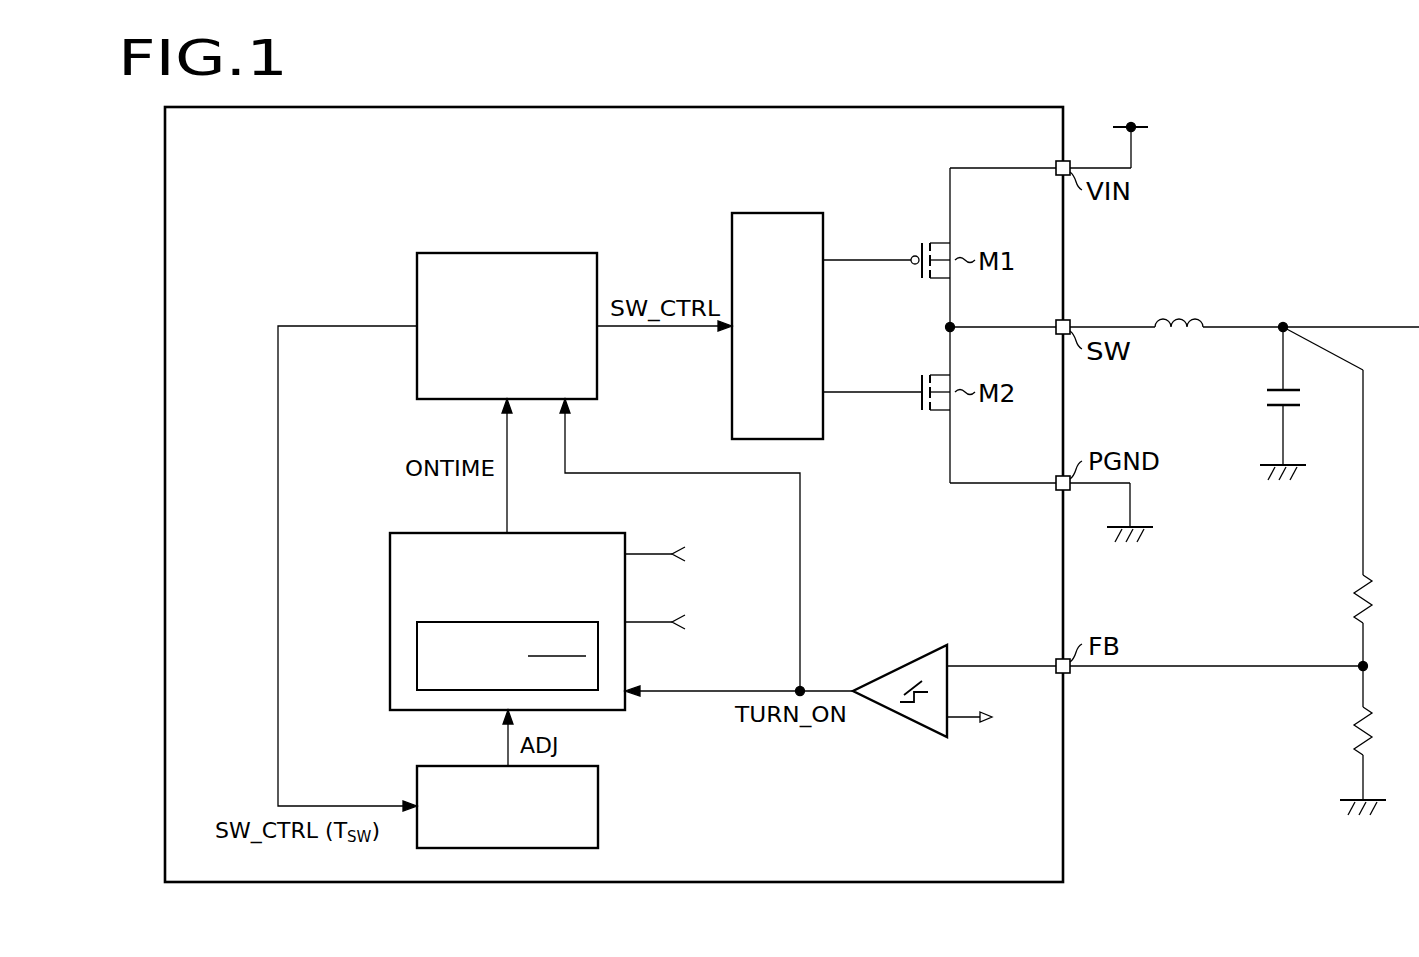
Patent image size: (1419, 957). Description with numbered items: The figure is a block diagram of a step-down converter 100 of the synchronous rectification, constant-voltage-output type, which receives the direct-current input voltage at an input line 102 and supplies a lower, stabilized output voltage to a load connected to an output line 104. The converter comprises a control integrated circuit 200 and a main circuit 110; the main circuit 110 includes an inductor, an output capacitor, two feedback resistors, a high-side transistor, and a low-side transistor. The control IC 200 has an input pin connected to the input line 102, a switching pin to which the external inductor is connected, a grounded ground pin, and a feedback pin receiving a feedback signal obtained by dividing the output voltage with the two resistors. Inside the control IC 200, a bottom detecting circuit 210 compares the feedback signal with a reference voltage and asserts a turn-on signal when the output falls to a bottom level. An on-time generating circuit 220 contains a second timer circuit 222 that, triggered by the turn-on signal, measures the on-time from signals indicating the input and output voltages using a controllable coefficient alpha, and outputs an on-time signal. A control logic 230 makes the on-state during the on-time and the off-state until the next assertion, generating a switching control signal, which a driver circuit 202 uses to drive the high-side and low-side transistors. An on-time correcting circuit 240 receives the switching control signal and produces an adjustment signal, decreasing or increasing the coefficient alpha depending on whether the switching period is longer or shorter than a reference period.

The step-down converter 100 is at (1150, 525).
The input line 102 is at (1148, 123).
The output line 104 is at (1333, 325).
The main circuit 110 is at (1408, 820).
The control integrated circuit (IC) 200 is at (950, 107).
The driver circuit 202 is at (780, 213).
The bottom detecting circuit 210 is at (912, 722).
The on-time generating circuit 220 is at (570, 533).
The second timer circuit 222 is at (583, 622).
The control logic 230 is at (538, 253).
The on-time correcting circuit 240 is at (600, 806).